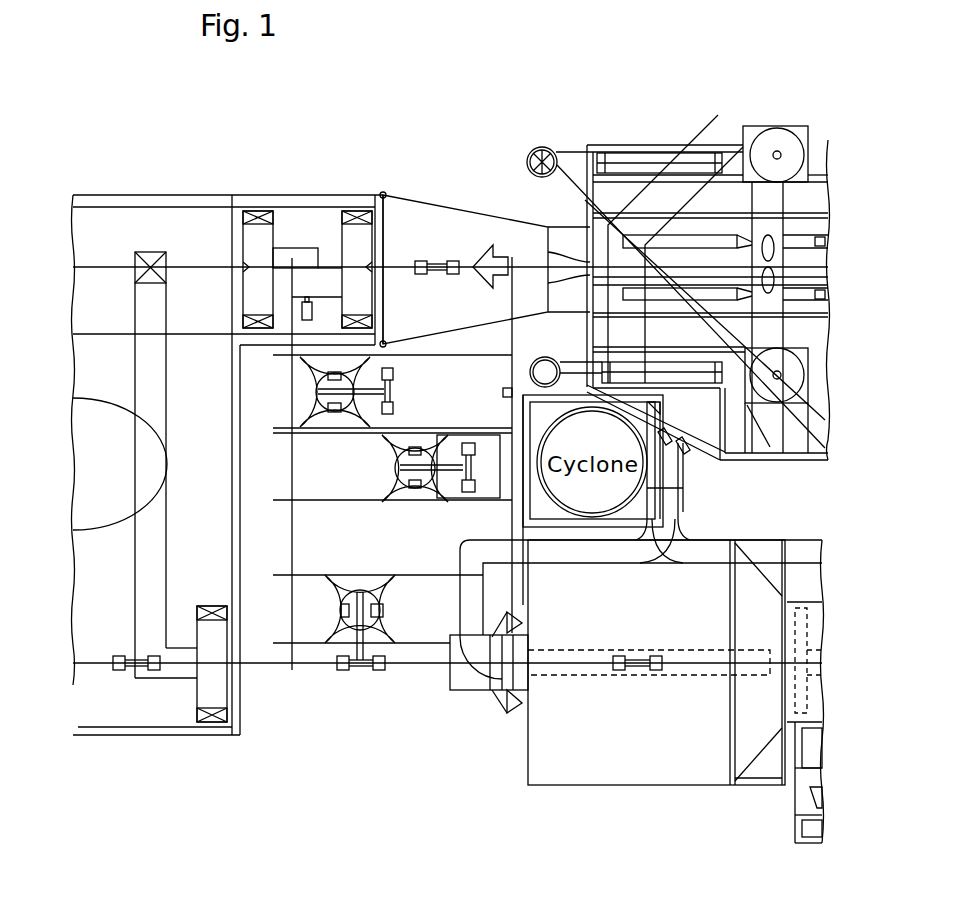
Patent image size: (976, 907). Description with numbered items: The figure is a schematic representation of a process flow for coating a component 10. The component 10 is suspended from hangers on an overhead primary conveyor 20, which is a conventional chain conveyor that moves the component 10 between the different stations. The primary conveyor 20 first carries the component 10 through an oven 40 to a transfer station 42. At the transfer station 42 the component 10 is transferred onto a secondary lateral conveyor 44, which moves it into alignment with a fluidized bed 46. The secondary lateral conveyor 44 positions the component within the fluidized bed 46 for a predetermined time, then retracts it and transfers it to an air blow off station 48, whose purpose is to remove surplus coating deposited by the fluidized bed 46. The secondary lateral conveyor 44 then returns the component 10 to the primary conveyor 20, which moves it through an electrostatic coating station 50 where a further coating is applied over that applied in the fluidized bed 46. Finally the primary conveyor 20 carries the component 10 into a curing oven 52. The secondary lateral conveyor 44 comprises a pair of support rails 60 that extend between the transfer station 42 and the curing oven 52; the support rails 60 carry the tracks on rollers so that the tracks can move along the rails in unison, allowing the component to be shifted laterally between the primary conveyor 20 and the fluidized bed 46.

The component 10 is at (132, 660).
The primary conveyor 20 is at (253, 665).
The oven 40 is at (113, 714).
The transfer station 42 is at (368, 668).
The secondary lateral conveyor 44 is at (273, 525).
The fluidized bed 46 is at (417, 487).
The air blow off station 48 is at (298, 375).
The electrostatic coating station 50 is at (655, 757).
The curing oven 52 is at (427, 248).
The support rails 60 is at (510, 307).